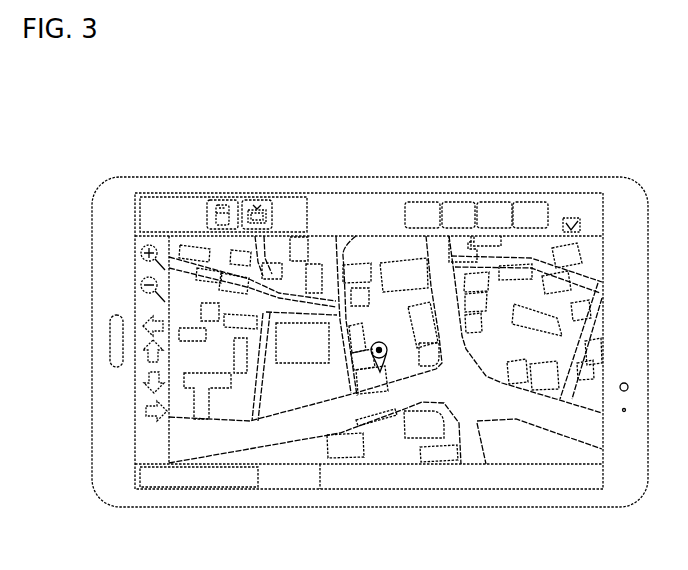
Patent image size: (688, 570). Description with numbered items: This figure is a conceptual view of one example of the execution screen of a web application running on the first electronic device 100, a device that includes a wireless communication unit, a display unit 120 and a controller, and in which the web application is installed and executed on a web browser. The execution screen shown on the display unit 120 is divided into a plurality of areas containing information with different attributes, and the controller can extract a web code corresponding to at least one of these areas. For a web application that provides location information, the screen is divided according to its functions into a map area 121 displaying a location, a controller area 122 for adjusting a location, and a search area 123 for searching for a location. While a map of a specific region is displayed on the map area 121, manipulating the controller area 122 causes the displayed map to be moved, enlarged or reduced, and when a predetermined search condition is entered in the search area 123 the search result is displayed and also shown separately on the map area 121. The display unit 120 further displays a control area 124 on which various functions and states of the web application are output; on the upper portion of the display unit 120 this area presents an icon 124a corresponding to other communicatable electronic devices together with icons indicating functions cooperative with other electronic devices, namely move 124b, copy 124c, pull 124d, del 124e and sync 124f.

The electronic device 100 is at (160, 157).
The display unit 120 is at (135, 273).
The map area 121 is at (502, 403).
The controller area 122 is at (153, 437).
The search area 123 is at (200, 476).
The control area 124 is at (612, 144).
The icon 124a is at (263, 204).
The move icon 124b is at (420, 201).
The copy icon 124c is at (458, 201).
The pull icon 124d is at (494, 201).
The del icon 124e is at (528, 201).
The sync icon 124f is at (583, 227).